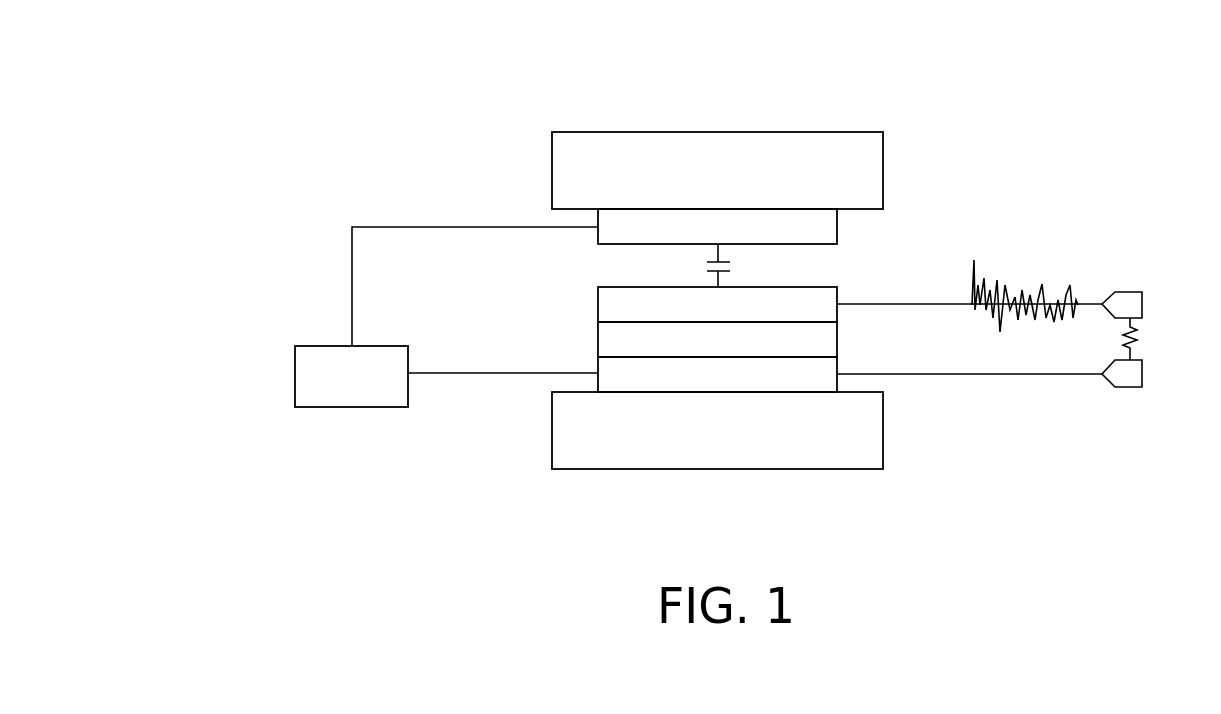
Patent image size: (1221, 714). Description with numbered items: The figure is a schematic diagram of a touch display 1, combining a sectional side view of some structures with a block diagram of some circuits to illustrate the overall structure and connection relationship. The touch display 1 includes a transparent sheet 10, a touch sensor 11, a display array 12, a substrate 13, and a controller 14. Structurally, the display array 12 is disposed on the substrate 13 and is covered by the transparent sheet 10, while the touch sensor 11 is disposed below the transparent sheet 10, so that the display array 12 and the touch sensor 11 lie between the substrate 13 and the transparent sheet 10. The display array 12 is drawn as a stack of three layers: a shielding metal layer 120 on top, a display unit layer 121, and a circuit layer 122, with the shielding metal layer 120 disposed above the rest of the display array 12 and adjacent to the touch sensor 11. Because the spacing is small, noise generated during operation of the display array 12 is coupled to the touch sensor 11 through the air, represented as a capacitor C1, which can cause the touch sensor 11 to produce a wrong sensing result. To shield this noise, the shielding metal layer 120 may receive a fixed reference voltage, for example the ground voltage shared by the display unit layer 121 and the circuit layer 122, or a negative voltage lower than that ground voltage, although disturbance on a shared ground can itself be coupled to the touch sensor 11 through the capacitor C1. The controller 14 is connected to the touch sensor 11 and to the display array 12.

The touch display 1 is at (910, 80).
The transparent sheet 10 is at (552, 172).
The touch sensor 11 is at (598, 235).
The display array 12 is at (686, 339).
The shielding metal layer 120 is at (717, 304).
The display unit layer 121 is at (717, 339).
The circuit layer 122 is at (717, 374).
The substrate 13 is at (552, 430).
The controller 14 is at (295, 373).
The capacitor C1 is at (732, 267).